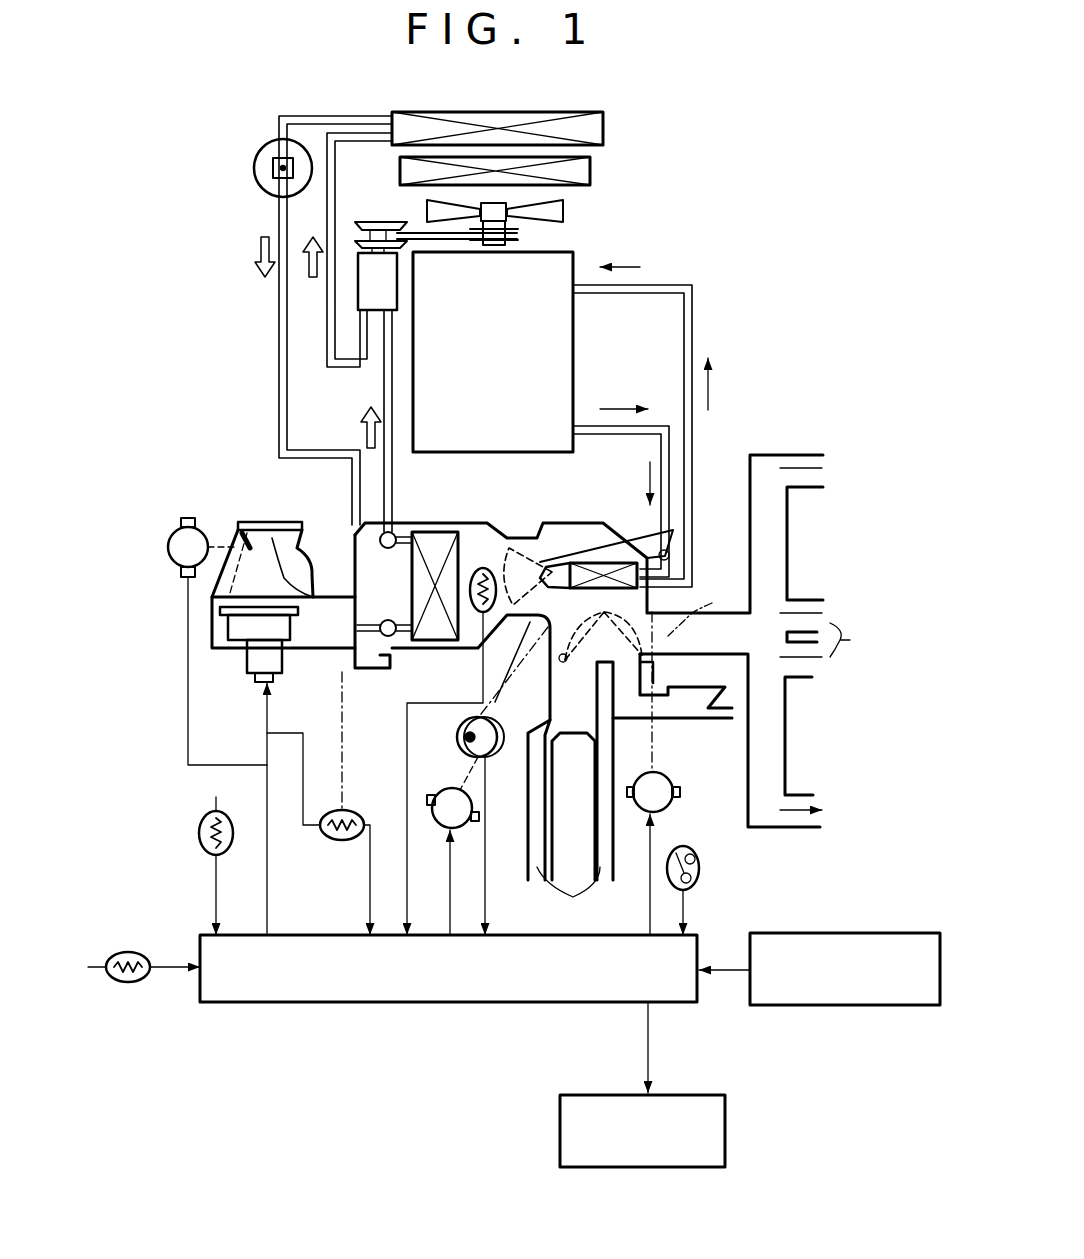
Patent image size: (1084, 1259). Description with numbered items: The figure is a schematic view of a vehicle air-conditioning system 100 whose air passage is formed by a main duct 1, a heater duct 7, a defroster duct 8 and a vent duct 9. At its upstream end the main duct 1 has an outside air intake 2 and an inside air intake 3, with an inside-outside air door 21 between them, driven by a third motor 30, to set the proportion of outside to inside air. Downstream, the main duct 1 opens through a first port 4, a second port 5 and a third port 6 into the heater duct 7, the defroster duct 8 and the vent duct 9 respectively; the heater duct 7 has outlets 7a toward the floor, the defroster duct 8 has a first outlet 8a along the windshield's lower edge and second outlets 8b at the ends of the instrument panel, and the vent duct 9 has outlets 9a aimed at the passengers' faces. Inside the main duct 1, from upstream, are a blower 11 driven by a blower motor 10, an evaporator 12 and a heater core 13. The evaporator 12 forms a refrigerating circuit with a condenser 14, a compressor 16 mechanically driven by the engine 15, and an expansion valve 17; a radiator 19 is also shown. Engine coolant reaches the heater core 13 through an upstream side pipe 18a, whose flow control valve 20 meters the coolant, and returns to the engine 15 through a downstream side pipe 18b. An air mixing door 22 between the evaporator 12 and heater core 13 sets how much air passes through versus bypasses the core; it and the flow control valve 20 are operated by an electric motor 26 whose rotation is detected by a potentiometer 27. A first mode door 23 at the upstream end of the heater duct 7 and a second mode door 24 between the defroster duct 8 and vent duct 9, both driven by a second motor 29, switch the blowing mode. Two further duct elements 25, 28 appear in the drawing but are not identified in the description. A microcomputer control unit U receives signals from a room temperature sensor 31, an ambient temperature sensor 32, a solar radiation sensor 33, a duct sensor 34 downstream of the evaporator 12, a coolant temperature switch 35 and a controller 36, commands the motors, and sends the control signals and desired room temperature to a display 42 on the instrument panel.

The main duct 1 is at (406, 520).
The outside air intake 2 is at (243, 521).
The inside air intake 3 is at (212, 580).
The first port 4 is at (513, 647).
The second port 5 is at (625, 660).
The third port 6 is at (657, 600).
The heater duct 7 is at (557, 746).
The outlets 7a is at (568, 899).
The defroster duct 8 is at (681, 722).
The first outlet 8a is at (700, 675).
The second outlets 8b is at (733, 715).
The vent duct 9 is at (793, 544).
The outlets 9a is at (790, 452).
The blower motor 10 is at (257, 658).
The blower 11 is at (240, 627).
The evaporator 12 is at (430, 540).
The heater core 13 is at (603, 521).
The condenser 14 is at (604, 112).
The engine 15 is at (556, 270).
The compressor 16 is at (378, 224).
The expansion valve 17 is at (387, 618).
The upstream side pipe 18a is at (597, 427).
The downstream side pipe 18b is at (677, 290).
The radiator 19 is at (592, 165).
The flow control valve 20 is at (668, 555).
The inside-outside air door 21 is at (264, 521).
The air mixing door 22 is at (526, 543).
The first mode door 23 is at (513, 670).
The second mode door 24 is at (702, 608).
The heater core 25 is at (558, 542).
The electric motor 26 is at (446, 790).
The potentiometer 27 is at (457, 720).
The rear damper 28 is at (578, 660).
The second motor 29 is at (672, 803).
The third motor 30 is at (171, 550).
The room temperature sensor 31 is at (342, 842).
The ambient temperature sensor 32 is at (198, 823).
The solar radiation sensor 33 is at (138, 950).
The duct sensor 34 is at (483, 562).
The coolant temperature switch 35 is at (702, 866).
The controller 36 is at (810, 934).
The display 42 is at (728, 1132).
The air-conditioning system 100 is at (247, 398).
The control unit U is at (460, 1005).